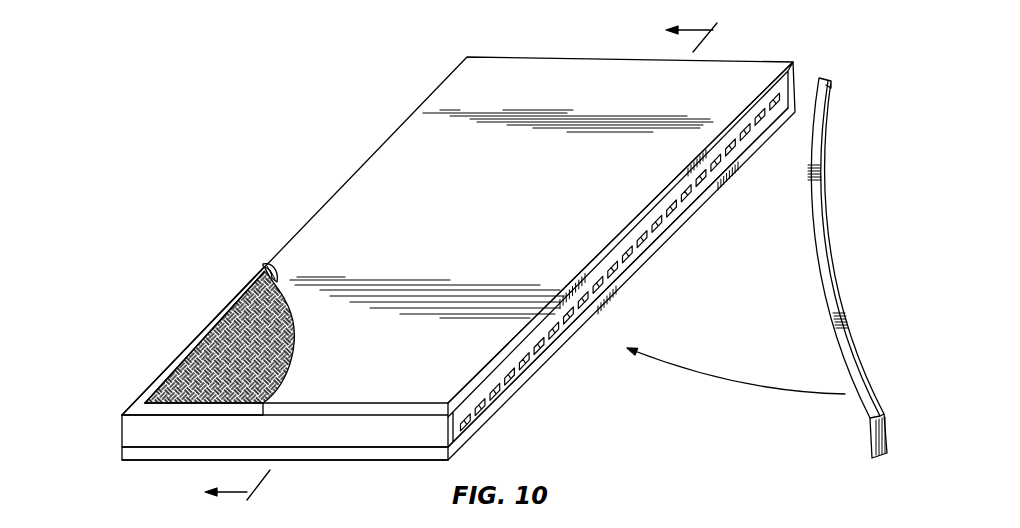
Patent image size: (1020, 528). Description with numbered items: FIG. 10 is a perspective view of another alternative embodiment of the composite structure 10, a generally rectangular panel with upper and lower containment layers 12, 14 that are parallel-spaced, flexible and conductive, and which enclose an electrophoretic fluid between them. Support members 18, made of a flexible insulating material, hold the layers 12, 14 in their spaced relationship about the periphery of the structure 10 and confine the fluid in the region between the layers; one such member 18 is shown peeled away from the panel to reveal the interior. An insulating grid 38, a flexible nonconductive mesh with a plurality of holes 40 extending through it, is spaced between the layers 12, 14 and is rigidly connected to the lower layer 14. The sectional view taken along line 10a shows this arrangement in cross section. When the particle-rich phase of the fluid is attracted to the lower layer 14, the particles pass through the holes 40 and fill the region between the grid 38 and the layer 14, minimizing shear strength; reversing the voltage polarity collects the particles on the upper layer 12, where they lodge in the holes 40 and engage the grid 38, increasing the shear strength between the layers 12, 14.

The composite structure 10 is at (318, 116).
The section view indicator 10a is at (479, 265).
The upper containment layer 12 is at (319, 226).
The lower containment layer 14 is at (157, 452).
The support member 18 is at (197, 344).
The insulating grid 38 is at (257, 275).
The holes 40 is at (234, 323).